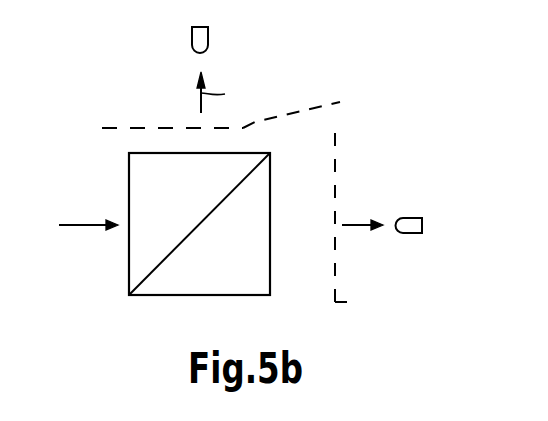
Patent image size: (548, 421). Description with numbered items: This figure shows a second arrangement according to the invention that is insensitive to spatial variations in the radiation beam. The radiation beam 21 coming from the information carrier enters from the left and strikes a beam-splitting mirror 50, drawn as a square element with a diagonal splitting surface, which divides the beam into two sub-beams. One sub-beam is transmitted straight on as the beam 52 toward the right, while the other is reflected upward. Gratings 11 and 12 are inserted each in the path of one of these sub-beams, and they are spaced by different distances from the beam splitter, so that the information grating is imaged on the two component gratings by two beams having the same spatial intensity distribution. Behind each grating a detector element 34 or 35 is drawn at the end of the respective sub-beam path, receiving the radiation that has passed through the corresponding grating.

The grating 11 is at (236, 104).
The grating 12 is at (357, 313).
The radiation beam 21 is at (85, 228).
The detector 34 is at (208, 36).
The detector 35 is at (412, 233).
The beam-splitting mirror 50 is at (148, 280).
The transmitted light beam 52 is at (360, 225).